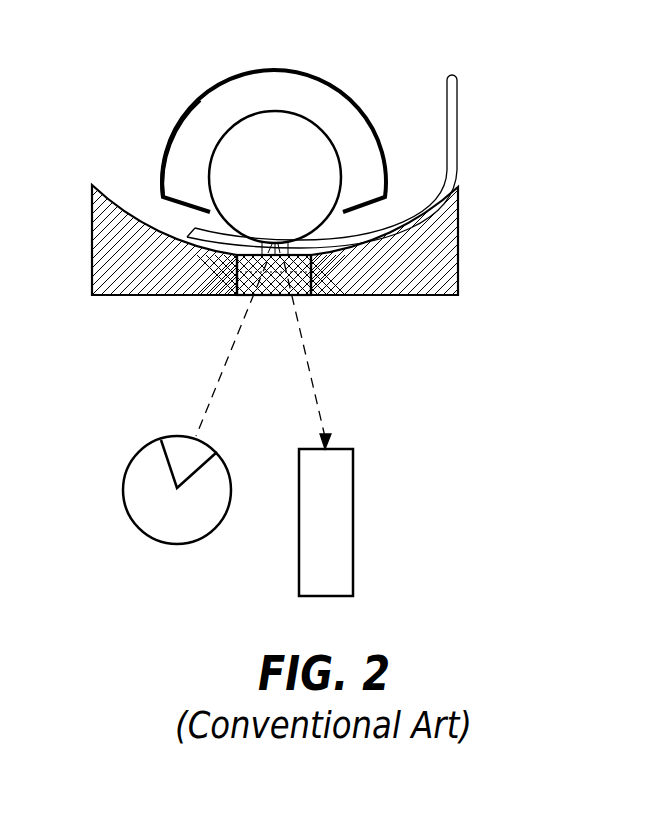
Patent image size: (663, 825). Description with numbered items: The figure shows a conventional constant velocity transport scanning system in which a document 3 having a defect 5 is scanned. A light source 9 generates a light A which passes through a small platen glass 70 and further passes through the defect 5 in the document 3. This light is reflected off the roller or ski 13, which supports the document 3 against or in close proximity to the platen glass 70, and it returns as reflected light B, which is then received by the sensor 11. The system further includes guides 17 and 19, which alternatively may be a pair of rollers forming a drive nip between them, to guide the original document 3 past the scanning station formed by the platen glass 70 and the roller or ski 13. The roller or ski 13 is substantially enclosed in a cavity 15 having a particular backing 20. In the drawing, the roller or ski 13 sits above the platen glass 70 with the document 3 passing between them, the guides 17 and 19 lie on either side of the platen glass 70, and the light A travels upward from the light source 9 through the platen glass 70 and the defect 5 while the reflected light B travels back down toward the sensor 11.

The document 3 is at (458, 117).
The defect 5 is at (273, 247).
The light source 9 is at (172, 545).
The sensor 11 is at (353, 557).
The roller or ski 13 is at (262, 111).
The cavity 15 is at (323, 83).
The guide 17 is at (458, 247).
The guide 19 is at (92, 227).
The backing 20 is at (207, 113).
The platen glass 70 is at (310, 292).
The light A is at (218, 384).
The reflected light B is at (308, 372).